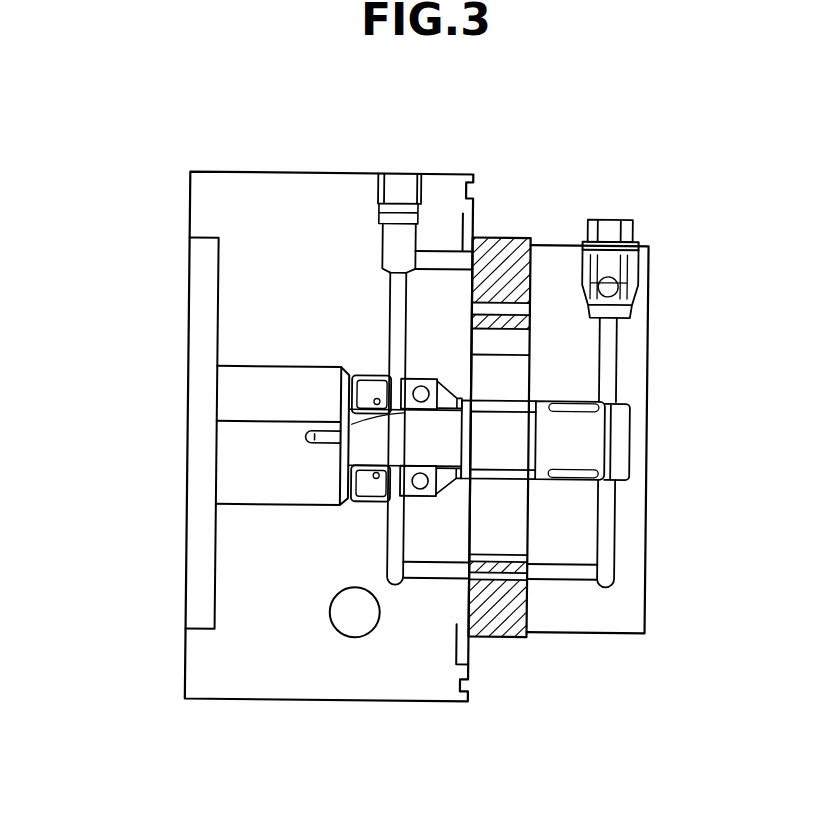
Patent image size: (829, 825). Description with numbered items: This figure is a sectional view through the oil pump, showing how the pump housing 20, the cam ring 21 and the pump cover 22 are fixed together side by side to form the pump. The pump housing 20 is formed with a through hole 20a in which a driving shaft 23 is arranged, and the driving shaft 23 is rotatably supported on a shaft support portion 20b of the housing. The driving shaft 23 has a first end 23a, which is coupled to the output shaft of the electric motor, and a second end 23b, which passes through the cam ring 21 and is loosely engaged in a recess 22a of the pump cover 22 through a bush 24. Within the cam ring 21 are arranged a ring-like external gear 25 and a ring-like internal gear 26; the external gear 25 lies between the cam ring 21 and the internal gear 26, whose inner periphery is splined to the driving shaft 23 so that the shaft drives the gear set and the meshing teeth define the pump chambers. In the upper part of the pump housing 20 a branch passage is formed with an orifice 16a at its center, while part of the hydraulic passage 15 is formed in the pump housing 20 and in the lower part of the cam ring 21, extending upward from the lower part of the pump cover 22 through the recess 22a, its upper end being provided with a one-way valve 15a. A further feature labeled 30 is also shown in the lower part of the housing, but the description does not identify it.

The pump housing 20 is at (227, 171).
The through hole 20a is at (262, 369).
The shaft support portion 20b is at (308, 432).
The orifice 16a is at (341, 246).
The cam ring 21 is at (504, 236).
The external gear 25 is at (512, 338).
The internal gear 26 is at (520, 493).
The pump cover 22 is at (623, 632).
The recess 22a is at (622, 469).
The driving shaft 23 is at (373, 445).
The first end 23a is at (322, 443).
The second end 23b is at (584, 421).
The bush 24 is at (586, 397).
The hydraulic passage 15 is at (616, 570).
The one-way valve 15a is at (632, 230).
The hole 30 is at (395, 528).